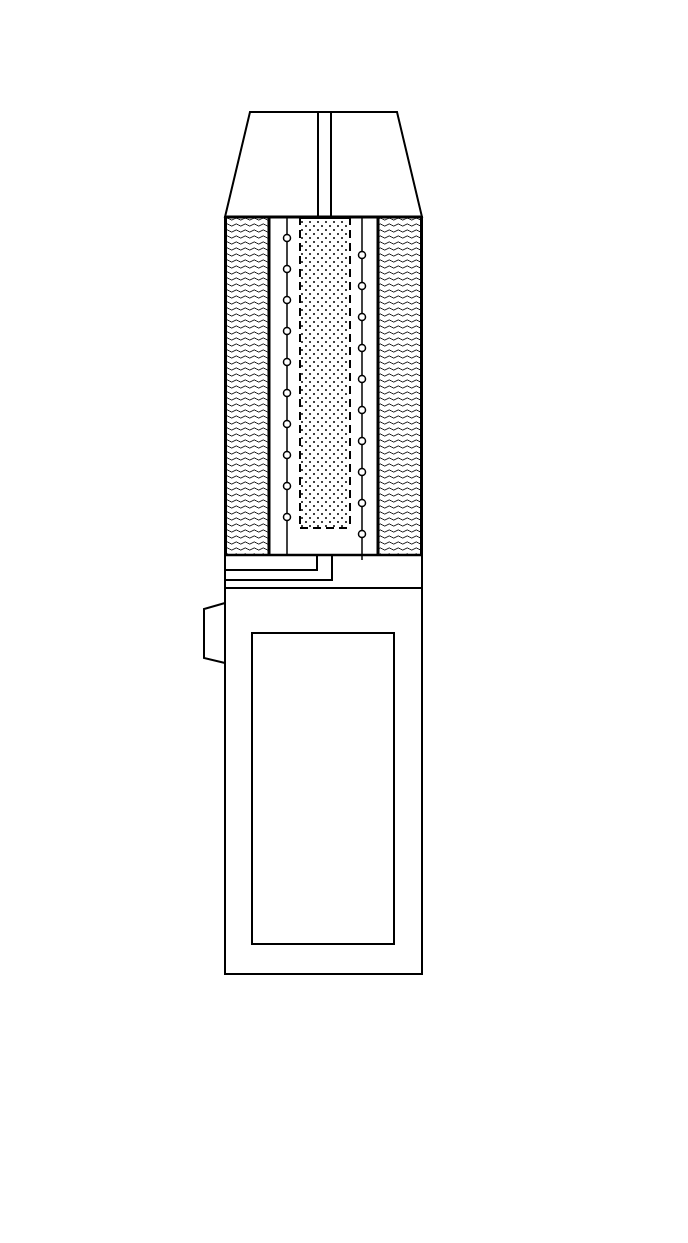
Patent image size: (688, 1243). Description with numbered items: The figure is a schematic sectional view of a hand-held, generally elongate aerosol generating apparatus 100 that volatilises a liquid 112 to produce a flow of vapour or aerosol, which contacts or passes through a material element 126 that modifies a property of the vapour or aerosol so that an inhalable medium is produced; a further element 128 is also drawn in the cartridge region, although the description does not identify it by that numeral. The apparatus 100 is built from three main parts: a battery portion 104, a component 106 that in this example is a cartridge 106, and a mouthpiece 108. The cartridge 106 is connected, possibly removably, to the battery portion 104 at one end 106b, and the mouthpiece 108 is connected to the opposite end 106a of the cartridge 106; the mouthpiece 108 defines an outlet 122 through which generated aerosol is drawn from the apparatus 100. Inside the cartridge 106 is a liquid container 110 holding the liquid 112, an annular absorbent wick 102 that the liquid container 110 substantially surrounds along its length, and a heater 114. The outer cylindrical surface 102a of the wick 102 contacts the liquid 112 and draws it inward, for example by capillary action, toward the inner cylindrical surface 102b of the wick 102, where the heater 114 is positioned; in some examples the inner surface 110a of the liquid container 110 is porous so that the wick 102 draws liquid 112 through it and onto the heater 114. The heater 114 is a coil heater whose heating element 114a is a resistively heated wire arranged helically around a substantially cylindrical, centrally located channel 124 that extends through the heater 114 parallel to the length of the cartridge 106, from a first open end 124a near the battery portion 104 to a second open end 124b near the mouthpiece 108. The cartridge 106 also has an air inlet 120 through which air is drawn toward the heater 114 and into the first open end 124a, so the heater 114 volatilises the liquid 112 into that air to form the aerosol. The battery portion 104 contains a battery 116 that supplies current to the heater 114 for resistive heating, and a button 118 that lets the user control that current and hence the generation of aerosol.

The aerosol generating apparatus 100 is at (108, 66).
The wick 102 is at (370, 328).
The outer cylindrical surface of the wick 102a is at (255, 286).
The inner cylindrical surface of the wick 102b is at (362, 296).
The battery portion 104 is at (423, 725).
The cartridge 106 is at (422, 355).
The end of the cartridge 106a is at (226, 218).
The end of the cartridge 106b is at (226, 558).
The mouthpiece 108 is at (415, 183).
The liquid container 110 is at (422, 402).
The inner surface of the liquid container 110a is at (258, 433).
The liquid 112 is at (401, 470).
The heater 114 is at (363, 503).
The heating element 114a is at (363, 503).
The battery 116 is at (394, 826).
The button 118 is at (203, 650).
The air inlet 120 is at (227, 578).
The outlet 122 is at (335, 172).
The channel 124 is at (338, 540).
The first open end of the channel 124a is at (348, 552).
The second open end of the channel 124b is at (357, 227).
The material element 126 is at (305, 345).
The reservoir wall 128 is at (300, 386).